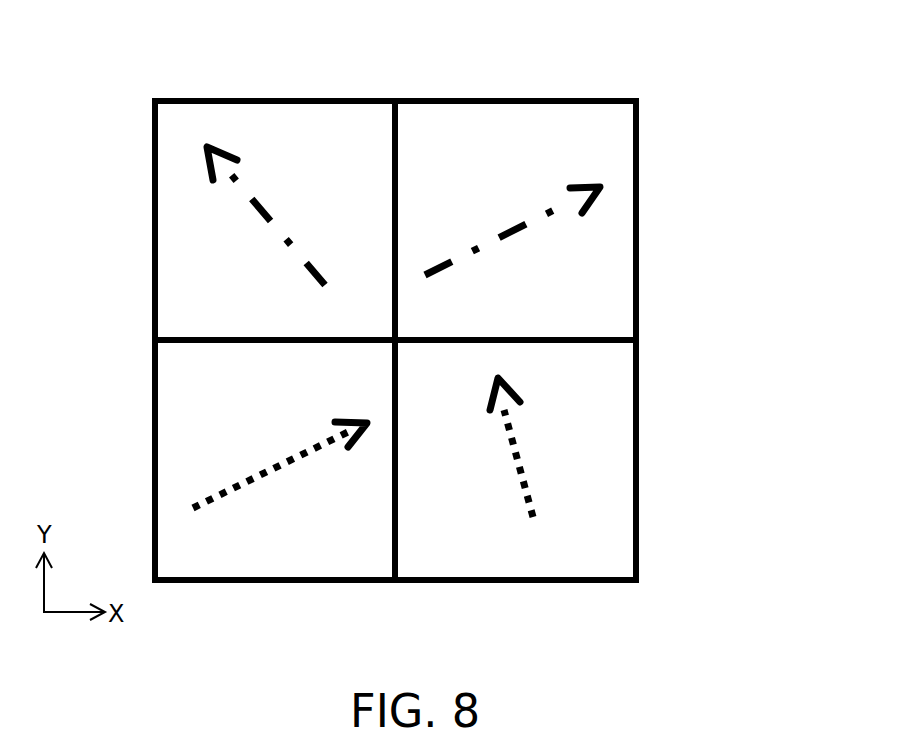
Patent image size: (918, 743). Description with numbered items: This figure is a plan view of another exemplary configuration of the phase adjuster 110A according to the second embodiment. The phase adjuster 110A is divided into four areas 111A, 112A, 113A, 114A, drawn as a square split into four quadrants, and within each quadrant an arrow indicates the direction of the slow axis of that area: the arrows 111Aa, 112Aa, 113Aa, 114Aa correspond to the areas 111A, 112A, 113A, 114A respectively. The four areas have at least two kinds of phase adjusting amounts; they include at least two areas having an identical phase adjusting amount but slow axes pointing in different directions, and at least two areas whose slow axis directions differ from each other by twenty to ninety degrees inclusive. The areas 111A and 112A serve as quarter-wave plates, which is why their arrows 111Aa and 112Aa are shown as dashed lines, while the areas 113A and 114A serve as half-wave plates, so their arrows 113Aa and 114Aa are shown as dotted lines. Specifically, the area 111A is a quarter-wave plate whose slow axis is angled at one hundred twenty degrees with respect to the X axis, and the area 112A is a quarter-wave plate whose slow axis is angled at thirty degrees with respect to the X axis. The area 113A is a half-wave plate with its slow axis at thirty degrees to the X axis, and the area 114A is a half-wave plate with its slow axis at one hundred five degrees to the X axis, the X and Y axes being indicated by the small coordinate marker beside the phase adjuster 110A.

The phase adjuster 110A is at (498, 341).
The area 111A is at (295, 112).
The area 112A is at (475, 112).
The area 113A is at (312, 570).
The area 114A is at (518, 567).
The arrow 111Aa is at (262, 212).
The arrow 112Aa is at (555, 214).
The arrow 113Aa is at (250, 477).
The arrow 114Aa is at (525, 475).